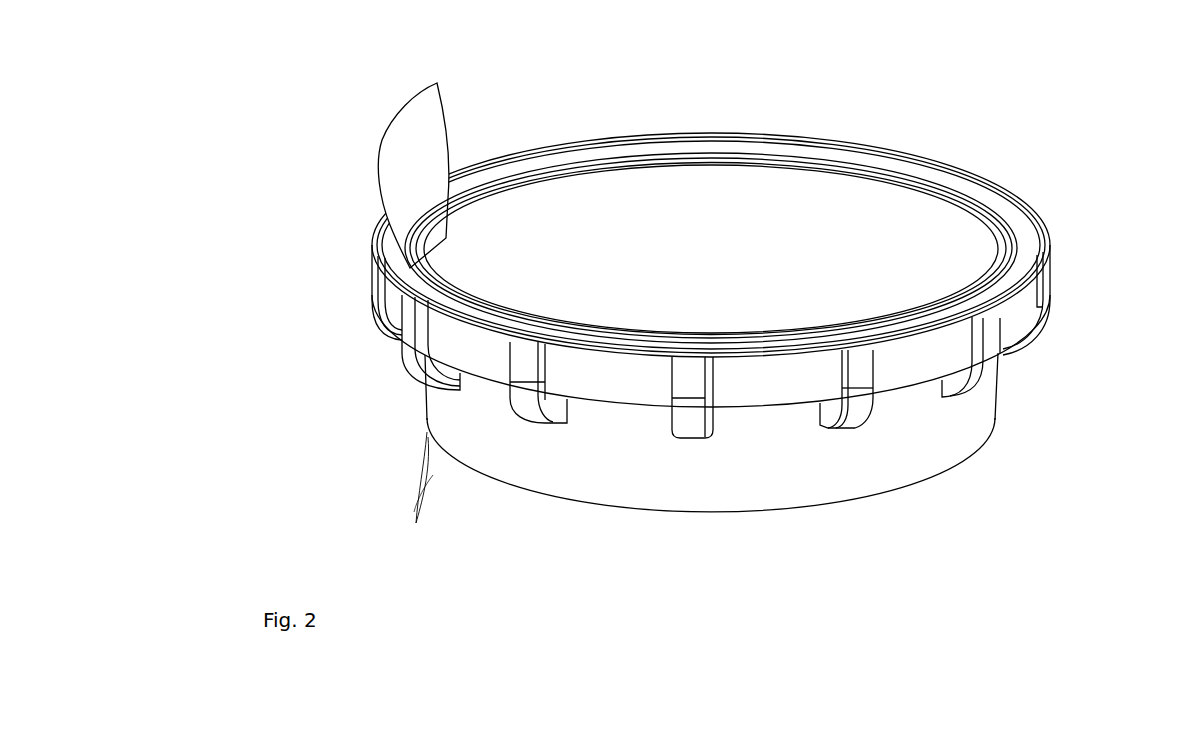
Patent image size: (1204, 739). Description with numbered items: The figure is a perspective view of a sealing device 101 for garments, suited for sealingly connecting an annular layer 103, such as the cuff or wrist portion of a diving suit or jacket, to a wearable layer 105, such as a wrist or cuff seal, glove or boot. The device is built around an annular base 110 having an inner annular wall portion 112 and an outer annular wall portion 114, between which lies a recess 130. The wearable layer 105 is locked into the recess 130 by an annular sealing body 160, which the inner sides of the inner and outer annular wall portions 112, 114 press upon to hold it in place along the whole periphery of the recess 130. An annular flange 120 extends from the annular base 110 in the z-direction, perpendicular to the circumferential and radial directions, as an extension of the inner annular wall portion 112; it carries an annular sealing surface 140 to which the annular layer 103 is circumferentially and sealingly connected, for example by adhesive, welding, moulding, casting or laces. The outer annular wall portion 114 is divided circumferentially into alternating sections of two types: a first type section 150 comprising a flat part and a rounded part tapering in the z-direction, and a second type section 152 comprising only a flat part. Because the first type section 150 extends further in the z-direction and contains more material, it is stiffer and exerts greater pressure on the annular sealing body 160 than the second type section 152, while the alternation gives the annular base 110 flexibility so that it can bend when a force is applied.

The sealing device 101 is at (706, 325).
The annular layer 103 is at (440, 473).
The wearable layer 105 is at (407, 153).
The annular base 110 is at (724, 420).
The inner annular wall portion 112 is at (798, 222).
The outer annular wall portion 114 is at (390, 303).
The annular flange 120 is at (691, 456).
The recess 130 is at (1003, 208).
The annular sealing surface 140 is at (888, 458).
The first type section 150 is at (695, 460).
The second type section 152 is at (762, 428).
The annular sealing body 160 is at (1017, 263).